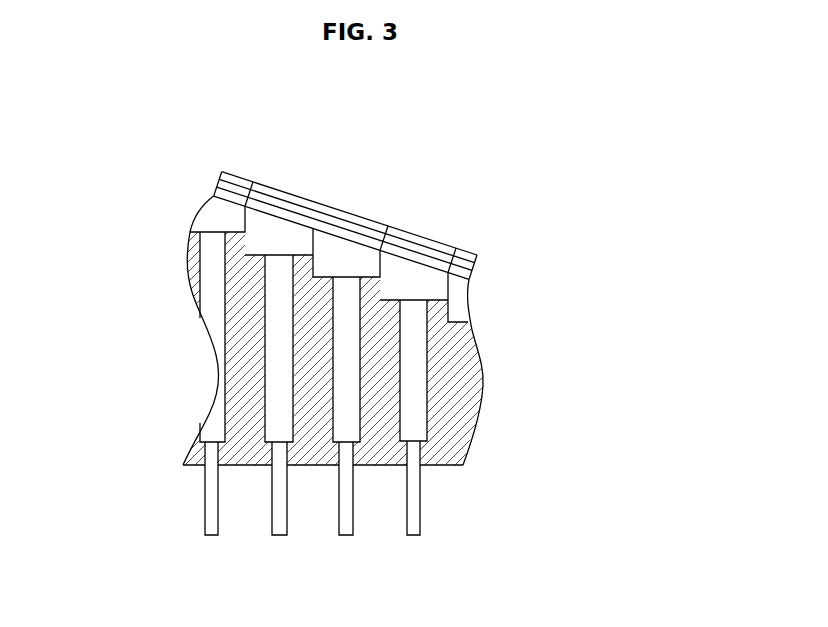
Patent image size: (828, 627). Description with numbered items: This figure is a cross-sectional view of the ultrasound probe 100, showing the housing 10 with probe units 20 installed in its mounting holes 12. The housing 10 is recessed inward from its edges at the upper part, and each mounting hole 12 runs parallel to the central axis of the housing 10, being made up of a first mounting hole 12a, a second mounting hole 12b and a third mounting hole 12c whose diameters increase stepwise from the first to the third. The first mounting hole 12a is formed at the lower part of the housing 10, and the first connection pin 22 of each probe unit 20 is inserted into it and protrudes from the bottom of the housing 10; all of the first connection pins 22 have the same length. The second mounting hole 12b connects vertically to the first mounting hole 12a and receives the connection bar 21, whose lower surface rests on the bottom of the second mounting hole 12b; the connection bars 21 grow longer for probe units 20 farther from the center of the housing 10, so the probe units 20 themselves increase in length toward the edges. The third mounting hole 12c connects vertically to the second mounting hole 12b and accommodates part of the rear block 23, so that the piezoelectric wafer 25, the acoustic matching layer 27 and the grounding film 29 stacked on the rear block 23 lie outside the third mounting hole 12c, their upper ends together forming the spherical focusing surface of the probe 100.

The ultrasound probe 100 is at (468, 167).
The housing 10 is at (313, 455).
The mounting hole 12 is at (557, 293).
The first mounting hole 12a is at (423, 458).
The second mounting hole 12b is at (425, 378).
The third mounting hole 12c is at (450, 308).
The probe unit 20 is at (201, 523).
The connection bar 21 is at (278, 326).
The first connection pin 22 is at (212, 528).
The rear block 23 is at (320, 250).
The piezoelectric wafer 25 is at (367, 242).
The acoustic matching layer 27 is at (350, 225).
The grounding film 29 is at (338, 213).